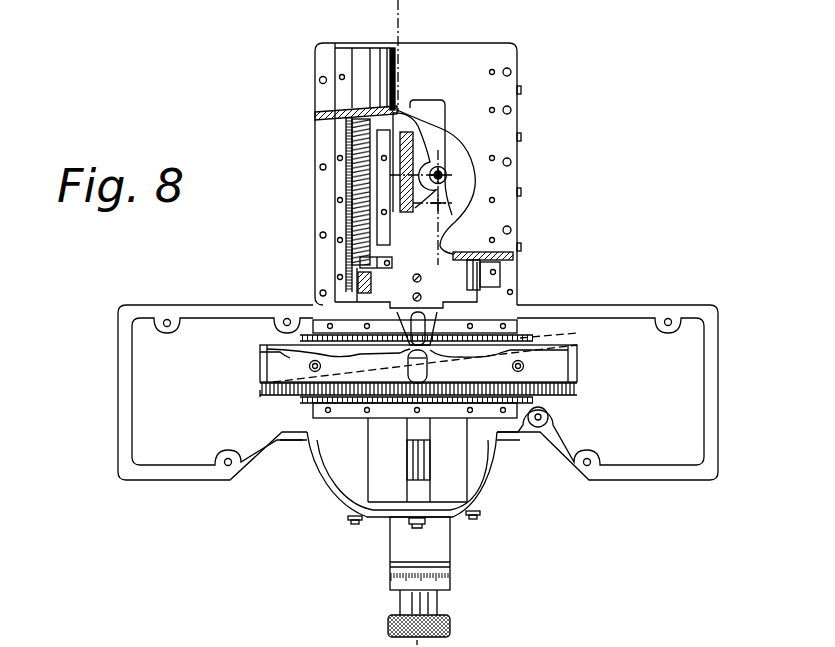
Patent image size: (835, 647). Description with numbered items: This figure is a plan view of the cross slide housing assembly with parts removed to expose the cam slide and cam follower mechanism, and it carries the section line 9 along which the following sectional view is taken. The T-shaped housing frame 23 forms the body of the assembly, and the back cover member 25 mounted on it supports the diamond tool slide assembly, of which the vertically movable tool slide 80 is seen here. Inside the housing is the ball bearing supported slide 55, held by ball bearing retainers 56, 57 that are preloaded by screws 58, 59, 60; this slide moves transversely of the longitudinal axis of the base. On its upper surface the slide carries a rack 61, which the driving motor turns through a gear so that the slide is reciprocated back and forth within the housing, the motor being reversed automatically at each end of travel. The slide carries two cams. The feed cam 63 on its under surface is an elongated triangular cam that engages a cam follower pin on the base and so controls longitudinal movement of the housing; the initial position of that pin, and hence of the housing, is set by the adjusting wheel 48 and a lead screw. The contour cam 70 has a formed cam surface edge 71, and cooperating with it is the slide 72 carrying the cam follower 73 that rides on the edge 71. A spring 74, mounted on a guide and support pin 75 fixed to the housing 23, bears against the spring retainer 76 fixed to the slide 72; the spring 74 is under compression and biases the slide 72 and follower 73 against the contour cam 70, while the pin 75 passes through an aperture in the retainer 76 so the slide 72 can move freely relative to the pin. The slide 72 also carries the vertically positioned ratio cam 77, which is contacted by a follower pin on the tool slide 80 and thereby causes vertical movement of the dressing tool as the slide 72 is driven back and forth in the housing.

The section line 9— 9 is at (405, 14).
The T-shaped housing frame 23 is at (167, 478).
The cover member 25 is at (465, 58).
The adjusting wheel 48 is at (450, 624).
The ball bearing supported slide 55 is at (577, 378).
The ball bearing retainer 56 is at (520, 336).
The ball bearing retainer 57 is at (535, 397).
The preloading screw 58 is at (423, 527).
The preloading screw 59 is at (480, 515).
The preloading screw 60 is at (347, 530).
The rack 61 is at (277, 393).
The feed cam 63 is at (273, 382).
The contour cam 70 is at (560, 360).
The cam surface edge 71 is at (267, 352).
The slide 72 is at (497, 290).
The cam follower 73 is at (438, 327).
The spring 74 is at (357, 211).
The guide and support pin 75 is at (353, 285).
The spring retainer 76 is at (360, 263).
The ratio cam 77 is at (395, 191).
The tool slide 80 is at (413, 158).